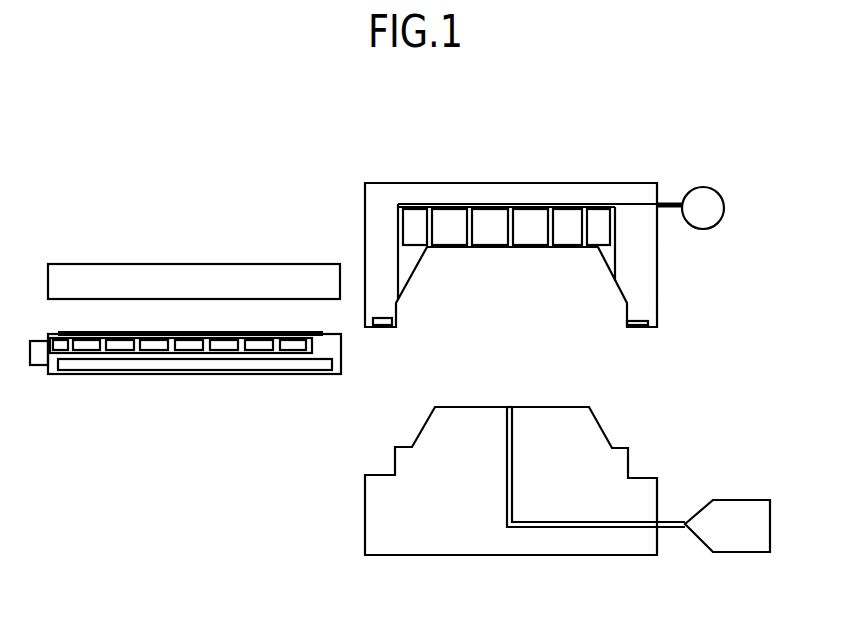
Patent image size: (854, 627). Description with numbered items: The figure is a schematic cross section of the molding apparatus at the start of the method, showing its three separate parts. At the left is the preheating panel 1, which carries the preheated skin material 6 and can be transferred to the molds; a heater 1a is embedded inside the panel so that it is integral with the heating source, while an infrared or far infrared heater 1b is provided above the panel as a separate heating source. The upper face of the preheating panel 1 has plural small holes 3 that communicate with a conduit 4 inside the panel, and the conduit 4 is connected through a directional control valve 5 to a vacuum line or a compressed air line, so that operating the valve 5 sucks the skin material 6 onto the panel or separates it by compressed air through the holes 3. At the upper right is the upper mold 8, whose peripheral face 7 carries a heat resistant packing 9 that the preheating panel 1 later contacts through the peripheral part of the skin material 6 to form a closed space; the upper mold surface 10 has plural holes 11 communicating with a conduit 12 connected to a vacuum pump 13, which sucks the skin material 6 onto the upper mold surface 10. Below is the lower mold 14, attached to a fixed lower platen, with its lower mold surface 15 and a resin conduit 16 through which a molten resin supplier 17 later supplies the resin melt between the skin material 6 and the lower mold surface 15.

The preheating panel 1 is at (100, 376).
The heater 1a is at (232, 375).
The infrared or far infrared heater 1b is at (225, 264).
The small holes 3 is at (277, 347).
The conduit 4 is at (152, 360).
The directional control valve 5 is at (38, 366).
The skin material 6 is at (117, 332).
The peripheral face 7 is at (650, 327).
The upper mold 8 is at (657, 255).
The heat resistant packing 9 is at (637, 327).
The upper mold surface 10 is at (490, 247).
The holes 11 is at (425, 231).
The conduit 12 is at (484, 203).
The vacuum pump 13 is at (707, 187).
The lower mold 14 is at (365, 528).
The lower mold surface 15 is at (484, 407).
The resin conduit 16 is at (605, 528).
The molten resin supplier 17 is at (740, 500).